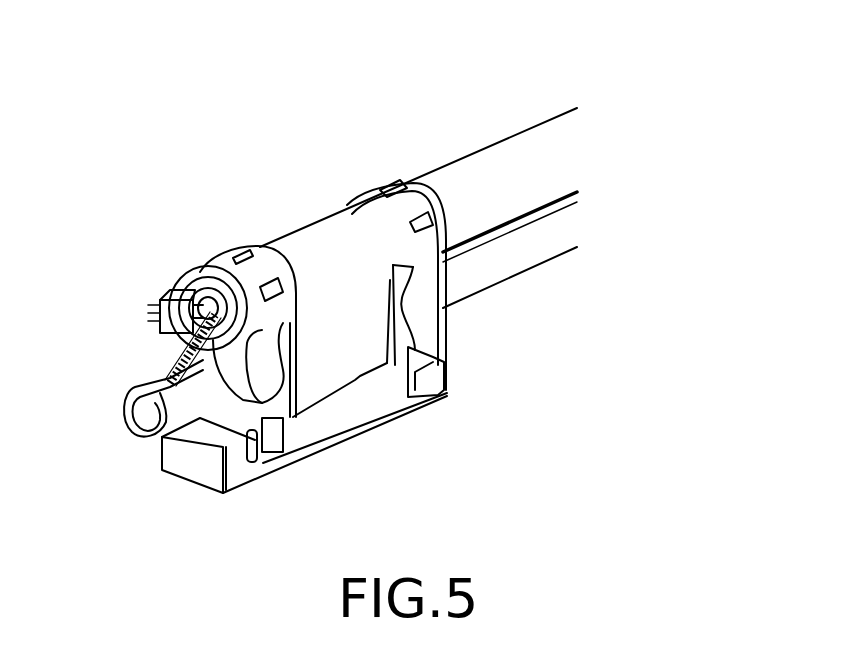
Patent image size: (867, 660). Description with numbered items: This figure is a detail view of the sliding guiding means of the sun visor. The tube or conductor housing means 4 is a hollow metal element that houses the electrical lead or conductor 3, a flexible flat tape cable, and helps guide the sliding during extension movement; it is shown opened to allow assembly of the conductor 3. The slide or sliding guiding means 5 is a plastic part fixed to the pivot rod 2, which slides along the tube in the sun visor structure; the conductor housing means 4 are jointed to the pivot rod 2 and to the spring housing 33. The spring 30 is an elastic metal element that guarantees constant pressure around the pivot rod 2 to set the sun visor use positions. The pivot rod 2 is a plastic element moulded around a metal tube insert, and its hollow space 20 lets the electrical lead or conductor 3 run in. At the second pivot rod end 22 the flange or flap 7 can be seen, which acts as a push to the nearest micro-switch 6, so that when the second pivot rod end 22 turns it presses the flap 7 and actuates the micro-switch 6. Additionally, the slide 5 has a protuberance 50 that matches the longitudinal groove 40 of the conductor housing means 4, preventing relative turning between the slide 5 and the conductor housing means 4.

The pivot rod 2 is at (535, 177).
The second pivot rod end 22 is at (455, 187).
The tube or conductor housing means 4 is at (523, 248).
The slide or sliding guiding means 5 is at (247, 270).
The flange or flap 7 is at (207, 292).
The micro-switch 6 is at (178, 295).
The hollow space 20 is at (153, 307).
The longitudinal groove 40 is at (147, 380).
The protuberance 50 is at (203, 355).
The electrical lead or conductor 3 is at (190, 347).
The spring 30 is at (322, 373).
The spring housing 33 is at (358, 383).